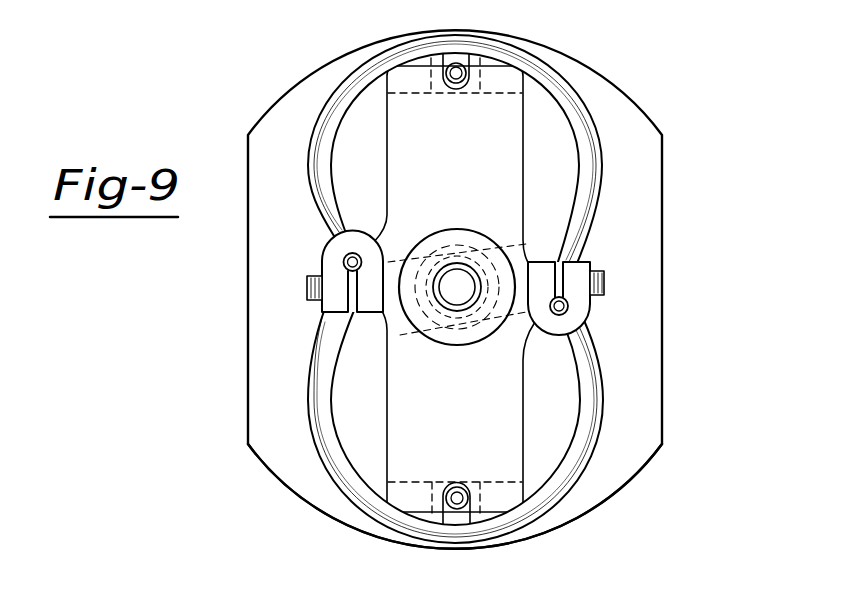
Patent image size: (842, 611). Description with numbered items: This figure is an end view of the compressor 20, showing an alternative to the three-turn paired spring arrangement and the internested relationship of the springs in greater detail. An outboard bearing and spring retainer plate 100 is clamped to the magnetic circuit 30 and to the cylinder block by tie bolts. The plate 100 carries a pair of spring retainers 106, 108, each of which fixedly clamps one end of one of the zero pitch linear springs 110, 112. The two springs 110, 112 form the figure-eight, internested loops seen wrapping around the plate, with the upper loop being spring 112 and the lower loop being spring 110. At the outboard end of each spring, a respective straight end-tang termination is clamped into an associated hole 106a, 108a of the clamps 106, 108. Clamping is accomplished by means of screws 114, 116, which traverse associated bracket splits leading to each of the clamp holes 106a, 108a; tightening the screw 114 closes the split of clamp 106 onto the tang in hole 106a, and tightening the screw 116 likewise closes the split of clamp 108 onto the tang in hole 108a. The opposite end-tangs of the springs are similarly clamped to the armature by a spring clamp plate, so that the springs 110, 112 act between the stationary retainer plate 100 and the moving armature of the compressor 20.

The compressor 20 is at (285, 65).
The magnetic circuit 30 is at (280, 480).
The outboard bearing and spring retainer plate 100 is at (415, 462).
The spring retainer 106 is at (637, 267).
The clamp hole 106a is at (583, 322).
The spring retainer 108 is at (279, 300).
The clamp hole 108a is at (344, 260).
The zero pitch linear spring 110 is at (600, 432).
The zero pitch linear spring 112 is at (574, 96).
The screw 114 is at (604, 283).
The screw 116 is at (307, 288).